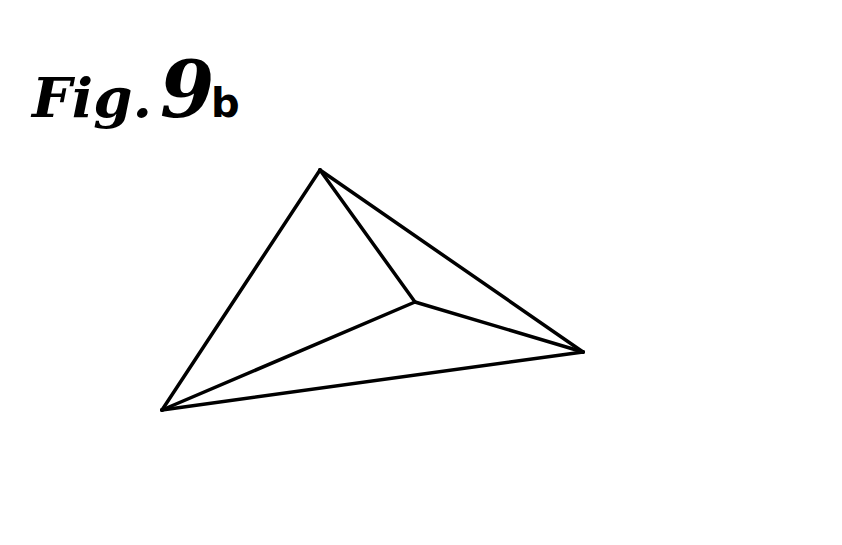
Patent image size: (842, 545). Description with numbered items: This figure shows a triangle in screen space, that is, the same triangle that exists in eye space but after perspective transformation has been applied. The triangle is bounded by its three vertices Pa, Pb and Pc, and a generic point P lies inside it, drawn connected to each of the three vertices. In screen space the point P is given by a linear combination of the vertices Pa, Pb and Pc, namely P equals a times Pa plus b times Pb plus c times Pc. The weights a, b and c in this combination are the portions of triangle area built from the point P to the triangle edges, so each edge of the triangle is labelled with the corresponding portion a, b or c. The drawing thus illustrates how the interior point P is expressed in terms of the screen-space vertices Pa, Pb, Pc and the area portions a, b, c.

The vertex Pa is at (162, 410).
The vertex Pb is at (583, 352).
The vertex Pc is at (320, 170).
The generic point P is at (415, 302).
The portion of triangle area a is at (422, 258).
The portion of triangle area b is at (283, 290).
The portion of triangle area c is at (326, 370).